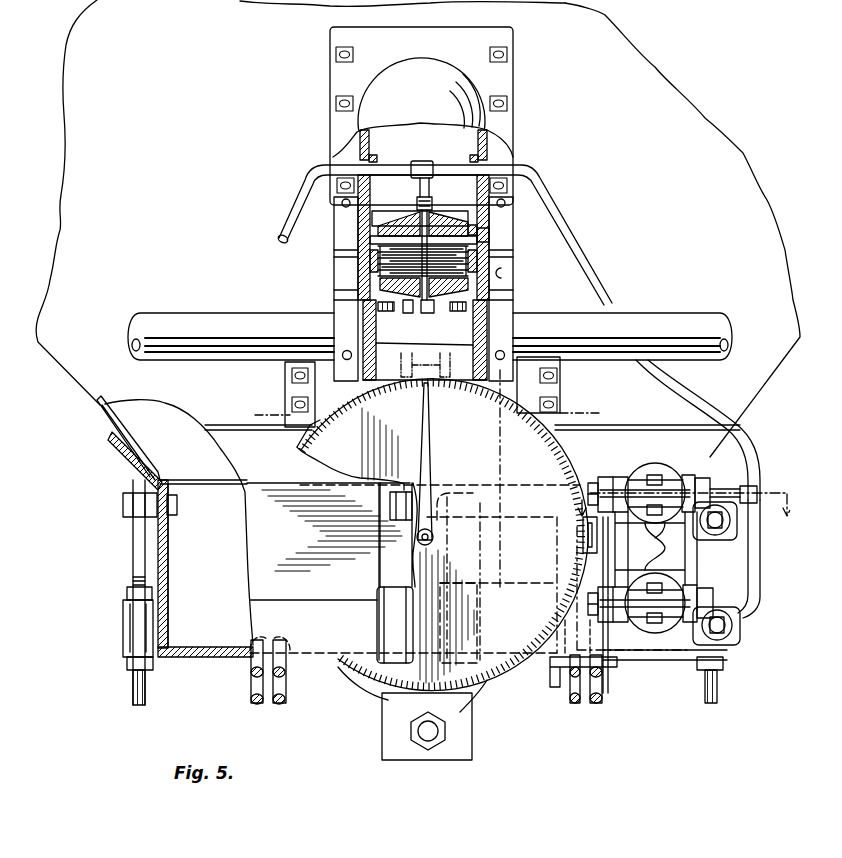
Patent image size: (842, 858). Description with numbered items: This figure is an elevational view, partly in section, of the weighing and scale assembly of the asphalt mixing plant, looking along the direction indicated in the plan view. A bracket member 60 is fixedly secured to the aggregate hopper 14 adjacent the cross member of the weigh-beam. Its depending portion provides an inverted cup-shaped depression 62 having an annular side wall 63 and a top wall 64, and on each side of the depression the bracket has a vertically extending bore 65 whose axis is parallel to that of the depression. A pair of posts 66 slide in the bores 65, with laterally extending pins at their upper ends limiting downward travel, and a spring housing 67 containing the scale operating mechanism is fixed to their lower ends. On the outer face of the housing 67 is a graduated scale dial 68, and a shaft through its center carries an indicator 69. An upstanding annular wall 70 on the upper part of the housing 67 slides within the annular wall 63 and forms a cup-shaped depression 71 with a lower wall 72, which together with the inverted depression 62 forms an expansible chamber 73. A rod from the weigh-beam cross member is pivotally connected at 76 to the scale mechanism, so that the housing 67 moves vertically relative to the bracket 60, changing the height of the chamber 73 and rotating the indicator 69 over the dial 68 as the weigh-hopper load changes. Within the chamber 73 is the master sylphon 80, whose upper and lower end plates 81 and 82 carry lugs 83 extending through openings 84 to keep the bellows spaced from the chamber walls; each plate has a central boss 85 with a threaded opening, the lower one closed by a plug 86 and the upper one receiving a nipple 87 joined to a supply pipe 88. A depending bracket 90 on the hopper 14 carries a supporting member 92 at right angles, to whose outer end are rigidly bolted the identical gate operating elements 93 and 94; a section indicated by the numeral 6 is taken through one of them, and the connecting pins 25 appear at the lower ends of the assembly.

The aggregate hopper 14 is at (700, 144).
The bracket member 60 is at (497, 83).
The supply pipe 88 is at (300, 184).
The top wall 64 is at (369, 217).
The nipple 87 is at (427, 216).
The upper end plate 81 is at (434, 222).
The expansible chamber 73 is at (370, 225).
The master sylphon 80 is at (385, 221).
The openings 84 is at (453, 228).
The cup-shaped depression 71 is at (377, 242).
The upstanding annular wall 70 is at (472, 260).
The inverted cup-shaped depression 62 is at (473, 232).
The annular side wall 63 is at (489, 242).
The lower wall 72 is at (397, 288).
The lower end plate 82 is at (453, 307).
The lugs 83 is at (388, 310).
The central boss 85 is at (411, 305).
The plug 86 is at (430, 314).
The bores 65 is at (353, 253).
The posts 66 is at (380, 275).
The spring housing 67 is at (336, 338).
The scale dial 68 is at (303, 415).
The pivotal connection 76 is at (392, 370).
The indicator 69 is at (430, 453).
The gate operating element 93 is at (667, 467).
The gate operating element 94 is at (663, 656).
The depending bracket 90 is at (133, 563).
The supporting member 92 is at (215, 665).
The connecting pins 25 is at (280, 704).
The section line 6- 6 is at (683, 500).